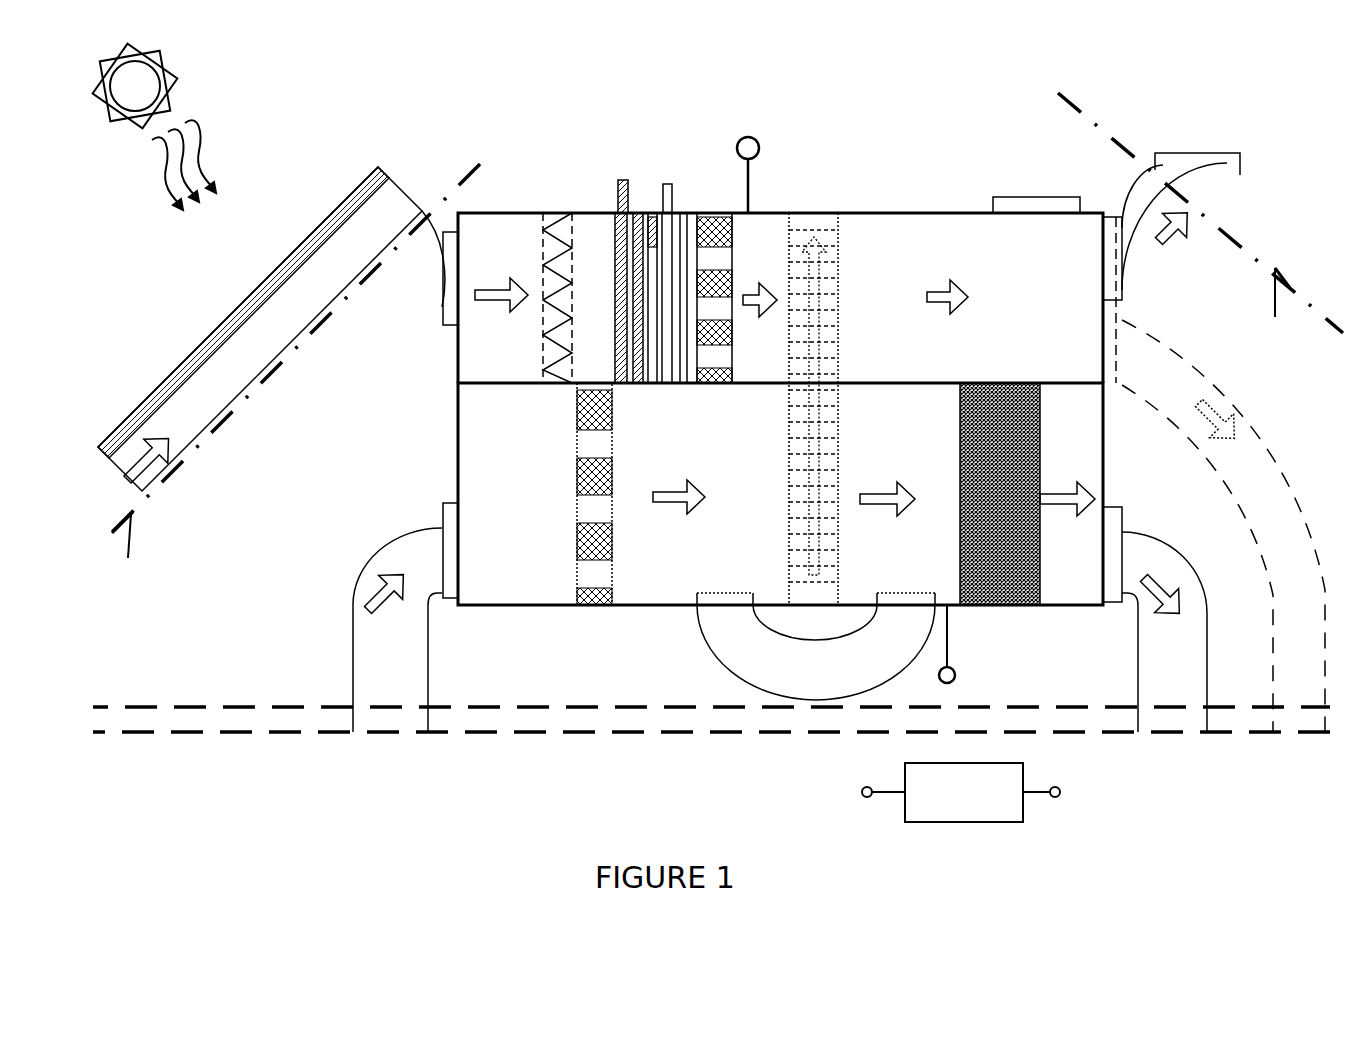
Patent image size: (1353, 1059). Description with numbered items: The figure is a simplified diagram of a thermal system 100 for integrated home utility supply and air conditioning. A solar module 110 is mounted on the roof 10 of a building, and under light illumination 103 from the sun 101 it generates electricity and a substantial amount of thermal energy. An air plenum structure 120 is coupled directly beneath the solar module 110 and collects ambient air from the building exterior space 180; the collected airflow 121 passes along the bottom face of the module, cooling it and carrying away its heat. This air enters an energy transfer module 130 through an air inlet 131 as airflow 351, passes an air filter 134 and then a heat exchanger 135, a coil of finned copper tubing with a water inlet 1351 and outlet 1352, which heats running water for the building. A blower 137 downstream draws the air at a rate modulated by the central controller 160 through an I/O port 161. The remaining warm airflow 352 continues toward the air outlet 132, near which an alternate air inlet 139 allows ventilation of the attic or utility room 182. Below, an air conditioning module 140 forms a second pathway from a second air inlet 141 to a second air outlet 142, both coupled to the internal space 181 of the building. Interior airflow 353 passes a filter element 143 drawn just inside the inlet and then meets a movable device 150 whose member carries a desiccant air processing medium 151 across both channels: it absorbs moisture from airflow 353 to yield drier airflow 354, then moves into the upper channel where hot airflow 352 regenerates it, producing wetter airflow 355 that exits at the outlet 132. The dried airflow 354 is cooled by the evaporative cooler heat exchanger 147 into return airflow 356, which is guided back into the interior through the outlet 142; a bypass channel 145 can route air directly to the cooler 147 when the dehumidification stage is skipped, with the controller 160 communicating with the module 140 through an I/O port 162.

The roof 10 is at (702, 429).
The thermal system 100 is at (923, 100).
The sun 101 is at (139, 80).
The light illumination 103 is at (199, 165).
The solar module 110 is at (300, 248).
The air plenum structure 120 is at (268, 324).
The collected airflow 121 is at (128, 468).
The energy transfer module 130 is at (928, 213).
The air inlet 131 is at (438, 290).
The air outlet 132 is at (1116, 217).
The air filter 134 is at (548, 228).
The heat exchanger 135 is at (613, 212).
The inlet 1351 is at (627, 180).
The outlet 1352 is at (663, 183).
The blower 137 is at (712, 215).
The alternate air inlet 139 is at (1040, 203).
The air conditioning module 140 is at (652, 607).
The second air inlet 141 is at (450, 528).
The second air outlet 142 is at (1112, 532).
The filter 143 is at (585, 587).
The bypass channel 145 is at (712, 642).
The heat exchanger (evaporative cooler) 147 is at (977, 565).
The movable device 150 is at (792, 418).
The air processing medium (desiccant material) 151 is at (802, 485).
The central controller 160 is at (961, 792).
The I/O port 161 is at (750, 165).
The I/O port 162 is at (949, 618).
The building exterior space 180 is at (118, 393).
The internal space 181 is at (335, 791).
The attic or utility room 182 is at (319, 685).
The airflow 351 is at (501, 312).
The airflow 352 is at (757, 316).
The airflow 353 is at (677, 516).
The airflow 354 is at (887, 514).
The airflow 355 is at (944, 313).
The return airflow 356 is at (1067, 515).